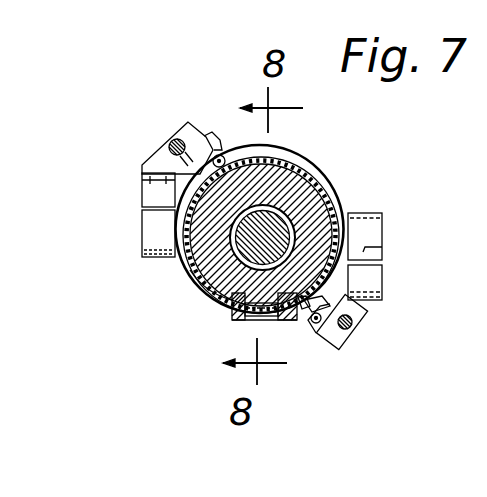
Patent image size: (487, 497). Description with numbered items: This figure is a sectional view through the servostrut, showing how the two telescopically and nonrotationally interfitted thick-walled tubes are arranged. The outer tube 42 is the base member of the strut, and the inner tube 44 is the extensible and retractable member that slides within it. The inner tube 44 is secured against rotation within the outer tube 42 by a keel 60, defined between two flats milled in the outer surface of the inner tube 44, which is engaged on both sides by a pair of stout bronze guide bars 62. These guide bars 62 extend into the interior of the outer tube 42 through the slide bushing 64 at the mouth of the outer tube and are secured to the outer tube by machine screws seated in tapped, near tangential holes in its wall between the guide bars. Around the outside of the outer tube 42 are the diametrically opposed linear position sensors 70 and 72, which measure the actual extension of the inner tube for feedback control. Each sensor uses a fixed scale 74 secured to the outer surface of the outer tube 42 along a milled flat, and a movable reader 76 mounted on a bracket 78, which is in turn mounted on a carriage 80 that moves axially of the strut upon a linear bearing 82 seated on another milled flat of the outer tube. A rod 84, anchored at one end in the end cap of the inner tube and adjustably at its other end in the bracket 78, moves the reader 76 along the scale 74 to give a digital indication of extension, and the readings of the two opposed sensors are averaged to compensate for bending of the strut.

The outer tube 42 is at (337, 197).
The inner tube 44 is at (202, 326).
The keel 60 is at (258, 322).
The guide bars 62 is at (232, 318).
The slide bushing 64 is at (317, 185).
The linear position sensor 70 is at (163, 258).
The linear position sensor 72 is at (383, 228).
The scale 74 is at (382, 255).
The reader 76 is at (368, 275).
The bracket 78 is at (365, 307).
The carriage 80 is at (316, 325).
The linear bearing 82 is at (300, 310).
The rod 84 is at (360, 322).